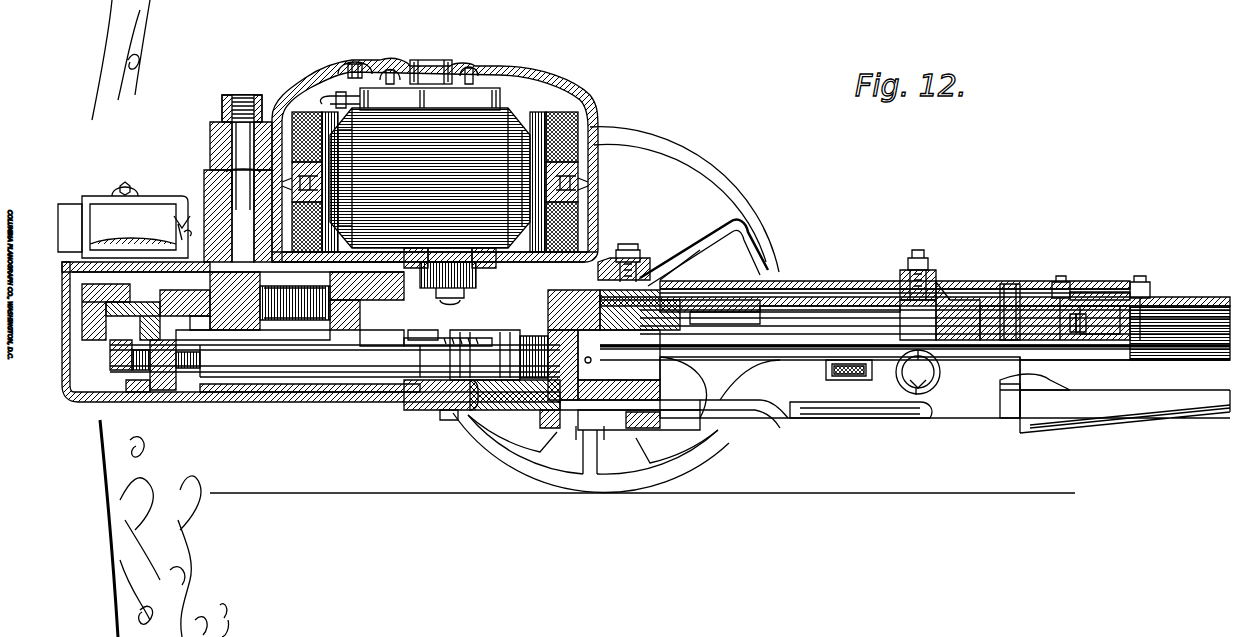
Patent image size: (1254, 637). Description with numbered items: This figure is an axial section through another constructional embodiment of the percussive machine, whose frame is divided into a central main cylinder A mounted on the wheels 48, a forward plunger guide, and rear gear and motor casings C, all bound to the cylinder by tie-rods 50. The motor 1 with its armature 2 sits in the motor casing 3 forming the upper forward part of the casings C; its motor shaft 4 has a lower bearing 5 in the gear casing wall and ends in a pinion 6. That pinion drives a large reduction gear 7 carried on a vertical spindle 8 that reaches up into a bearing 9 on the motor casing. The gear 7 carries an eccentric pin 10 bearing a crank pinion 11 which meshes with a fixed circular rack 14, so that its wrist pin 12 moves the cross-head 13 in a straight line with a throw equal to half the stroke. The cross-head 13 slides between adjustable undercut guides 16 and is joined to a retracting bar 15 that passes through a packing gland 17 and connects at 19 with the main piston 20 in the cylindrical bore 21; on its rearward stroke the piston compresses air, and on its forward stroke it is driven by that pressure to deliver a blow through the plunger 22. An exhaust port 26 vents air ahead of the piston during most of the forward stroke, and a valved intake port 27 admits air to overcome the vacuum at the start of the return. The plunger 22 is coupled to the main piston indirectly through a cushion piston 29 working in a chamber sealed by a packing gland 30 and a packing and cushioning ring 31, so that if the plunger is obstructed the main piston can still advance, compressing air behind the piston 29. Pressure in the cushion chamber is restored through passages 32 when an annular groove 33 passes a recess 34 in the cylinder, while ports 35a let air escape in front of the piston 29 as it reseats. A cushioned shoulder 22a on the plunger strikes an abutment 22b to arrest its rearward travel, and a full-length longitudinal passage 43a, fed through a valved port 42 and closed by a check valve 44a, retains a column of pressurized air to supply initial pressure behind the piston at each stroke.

The motor 1 is at (530, 112).
The armature 2 is at (474, 122).
The motor casing 3 is at (592, 104).
The motor shaft 4 is at (462, 270).
The lower bearing 5 is at (434, 300).
The pinion 6 is at (462, 292).
The reduction gear 7 is at (356, 302).
The spindle 8 is at (232, 140).
The bearing 9 is at (212, 192).
The eccentric pin 10 is at (214, 318).
The crank pinion 11 is at (274, 322).
The wrist pin 12 is at (112, 398).
The cross-head 13 is at (180, 390).
The fixed circular rack 14 is at (376, 340).
The retracting bar 15 is at (262, 378).
The under cut guides 16 is at (300, 396).
The casings C is at (338, 396).
The packing gland 17 is at (470, 398).
The connection 19 is at (568, 402).
The main piston 20 is at (640, 402).
The cylindrical bore 21 is at (915, 333).
The plunger 22 is at (840, 387).
The cushioned shoulder 22a is at (1086, 302).
The abutment 22b is at (1060, 292).
The exhaust port 26 is at (850, 372).
The valved intake port 27 is at (928, 378).
The piston 29 is at (692, 412).
The packing gland 30 is at (772, 284).
The packing and cushioning ring 31 is at (742, 290).
The passages 32 is at (624, 360).
The annular groove 33 is at (602, 250).
The recess 34 is at (732, 302).
The ports 35a is at (706, 292).
The valved port 42 is at (944, 282).
The longitudinal passage 43a is at (870, 284).
The check valve 44a is at (640, 258).
The wheels 48 is at (652, 152).
The tie-rods 50 is at (888, 420).
The main cylinder A is at (830, 282).